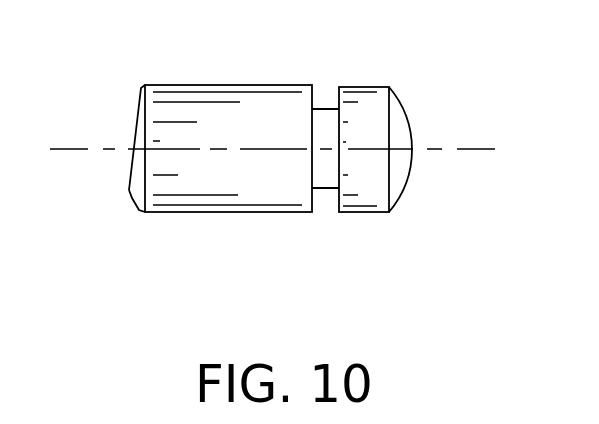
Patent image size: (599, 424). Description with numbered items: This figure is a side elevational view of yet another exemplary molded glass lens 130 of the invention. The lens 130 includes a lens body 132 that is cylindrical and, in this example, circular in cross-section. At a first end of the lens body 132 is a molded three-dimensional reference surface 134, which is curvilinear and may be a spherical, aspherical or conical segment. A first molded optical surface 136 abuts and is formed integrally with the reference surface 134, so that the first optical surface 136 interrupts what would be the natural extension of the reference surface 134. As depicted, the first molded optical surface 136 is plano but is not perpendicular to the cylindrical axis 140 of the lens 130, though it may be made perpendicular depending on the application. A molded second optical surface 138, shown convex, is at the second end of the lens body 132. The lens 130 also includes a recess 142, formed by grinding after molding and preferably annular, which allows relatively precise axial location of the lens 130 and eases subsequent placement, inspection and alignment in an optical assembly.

The molded glass lens 130 is at (440, 56).
The lens body 132 is at (175, 85).
The molded three-dimensional reference surface 134 is at (131, 196).
The first molded optical surface 136 is at (132, 118).
The molded second optical surface 138 is at (407, 182).
The cylindrical axis 140 is at (483, 148).
The recess 142 is at (327, 207).